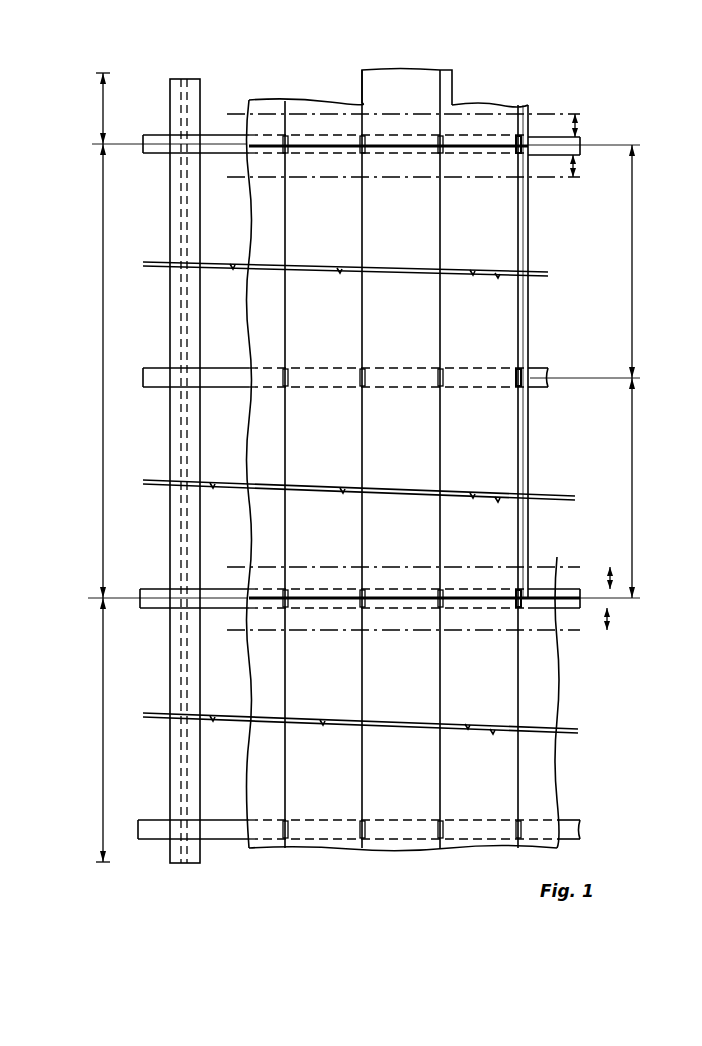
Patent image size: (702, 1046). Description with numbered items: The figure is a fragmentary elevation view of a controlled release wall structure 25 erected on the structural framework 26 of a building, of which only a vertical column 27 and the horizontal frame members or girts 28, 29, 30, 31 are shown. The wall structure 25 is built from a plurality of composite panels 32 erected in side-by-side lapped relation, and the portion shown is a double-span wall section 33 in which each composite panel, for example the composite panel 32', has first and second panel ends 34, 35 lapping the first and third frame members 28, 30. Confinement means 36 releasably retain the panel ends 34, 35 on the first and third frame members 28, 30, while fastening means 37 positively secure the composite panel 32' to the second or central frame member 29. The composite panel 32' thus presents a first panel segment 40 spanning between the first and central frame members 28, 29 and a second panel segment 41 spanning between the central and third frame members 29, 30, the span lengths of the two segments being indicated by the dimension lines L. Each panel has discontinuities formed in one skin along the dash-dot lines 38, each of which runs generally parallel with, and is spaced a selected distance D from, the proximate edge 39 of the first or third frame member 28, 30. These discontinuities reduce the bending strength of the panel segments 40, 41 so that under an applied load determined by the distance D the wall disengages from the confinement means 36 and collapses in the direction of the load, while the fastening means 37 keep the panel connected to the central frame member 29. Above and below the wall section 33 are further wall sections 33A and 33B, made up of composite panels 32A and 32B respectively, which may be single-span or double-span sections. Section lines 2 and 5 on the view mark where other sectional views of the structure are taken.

The controlled release wall structure 25 is at (565, 103).
The structural framework 26 is at (198, 72).
The vertical column 27 is at (176, 90).
The first frame member 28 is at (208, 590).
The second or central frame member 29 is at (210, 385).
The third frame member 30 is at (213, 150).
The horizontal frame member 31 is at (213, 826).
The composite panel 32 is at (408, 460).
The composite panel of upper wall section 32A is at (420, 78).
The composite panel of lower wall section 32B is at (525, 843).
The composite panel 32' is at (560, 351).
The double-span wall section 33 is at (103, 390).
The upper wall section 33A is at (103, 73).
The lower wall section 33B is at (103, 862).
The first panel end 34 is at (480, 595).
The second panel end 35 is at (463, 152).
The confinement means 36 is at (525, 150).
The fastening means 37 is at (527, 388).
The dash-dot line 38 is at (463, 153).
The proximate edge of frame member 39 is at (558, 590).
The first panel segment 40 is at (485, 453).
The second panel segment 41 is at (485, 323).
The section line 2- 2 is at (345, 85).
The section line 5- 5 is at (523, 88).
The span length dimension line L is at (633, 253).
The selected distance D is at (580, 124).